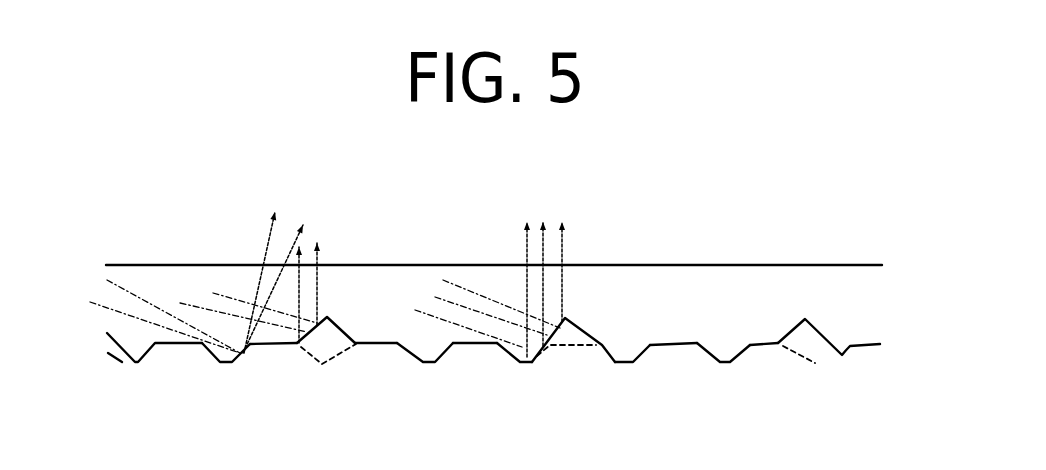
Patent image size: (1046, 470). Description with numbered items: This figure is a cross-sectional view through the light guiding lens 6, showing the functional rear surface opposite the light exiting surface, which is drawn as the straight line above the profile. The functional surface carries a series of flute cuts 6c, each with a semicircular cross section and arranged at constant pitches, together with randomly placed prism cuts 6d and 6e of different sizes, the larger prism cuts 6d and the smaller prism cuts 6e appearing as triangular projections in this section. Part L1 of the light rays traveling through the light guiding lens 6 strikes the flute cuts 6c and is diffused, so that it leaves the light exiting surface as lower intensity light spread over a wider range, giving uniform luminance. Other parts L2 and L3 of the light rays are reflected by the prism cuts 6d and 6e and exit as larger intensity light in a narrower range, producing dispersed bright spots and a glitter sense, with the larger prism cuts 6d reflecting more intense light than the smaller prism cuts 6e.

The light guiding lens 6 is at (718, 265).
The flute cuts 6c is at (223, 365).
The prism cuts (larger) 6d is at (600, 353).
The prism cuts (smaller) 6e is at (343, 332).
The part of the light rays (diffused light) L1 is at (273, 268).
The part of the light rays (reflected light) L2 is at (544, 271).
The part of the light rays (reflected light) L3 is at (321, 280).